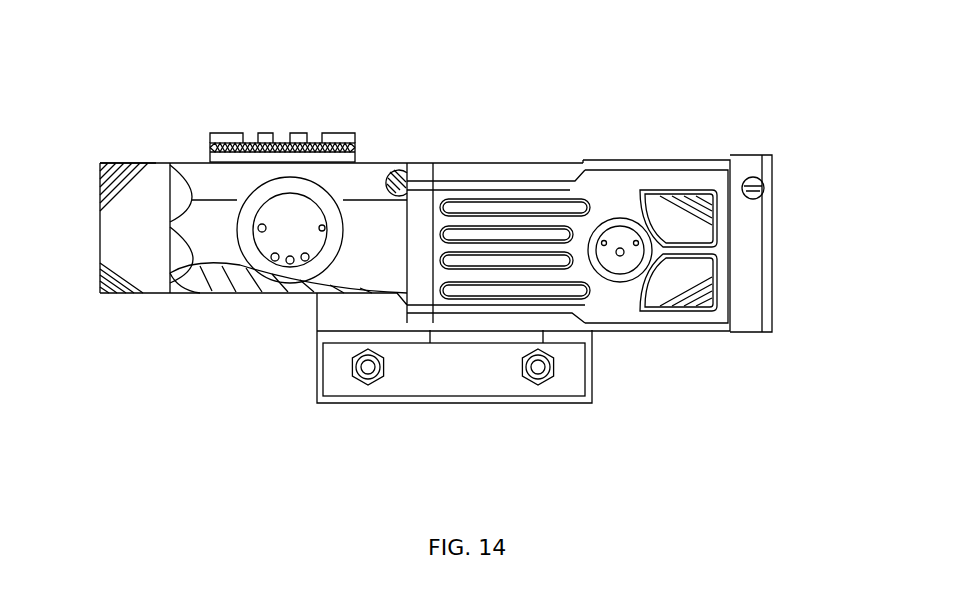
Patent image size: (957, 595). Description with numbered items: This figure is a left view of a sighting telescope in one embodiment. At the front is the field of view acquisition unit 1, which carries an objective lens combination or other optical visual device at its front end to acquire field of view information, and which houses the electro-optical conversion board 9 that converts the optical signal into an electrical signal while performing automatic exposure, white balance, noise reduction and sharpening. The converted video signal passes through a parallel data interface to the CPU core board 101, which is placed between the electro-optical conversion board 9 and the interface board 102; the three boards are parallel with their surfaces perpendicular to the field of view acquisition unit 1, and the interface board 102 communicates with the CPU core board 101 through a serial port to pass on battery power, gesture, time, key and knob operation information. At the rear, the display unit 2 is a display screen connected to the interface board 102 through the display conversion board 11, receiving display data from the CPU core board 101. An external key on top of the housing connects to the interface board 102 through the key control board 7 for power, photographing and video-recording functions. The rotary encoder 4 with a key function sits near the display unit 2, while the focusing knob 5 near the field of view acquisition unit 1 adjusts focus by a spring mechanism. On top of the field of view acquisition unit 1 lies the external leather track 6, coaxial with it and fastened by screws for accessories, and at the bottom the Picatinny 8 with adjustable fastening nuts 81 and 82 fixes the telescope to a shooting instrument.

The field of view acquisition unit 1 is at (108, 193).
The display unit 2 is at (772, 220).
The rotary encoder 4 is at (632, 252).
The focusing knob 5 is at (277, 260).
The external leather track 6 is at (266, 143).
The key control board 7 is at (622, 163).
The Picatinny 8 is at (443, 378).
The electro-optical conversion board 9 is at (406, 163).
The display conversion board 11 is at (690, 160).
The adjustable fastening nut I 81 is at (365, 380).
The adjustable fastening nut II 82 is at (552, 380).
The CPU core board 101 is at (433, 163).
The interface board 102 is at (452, 163).